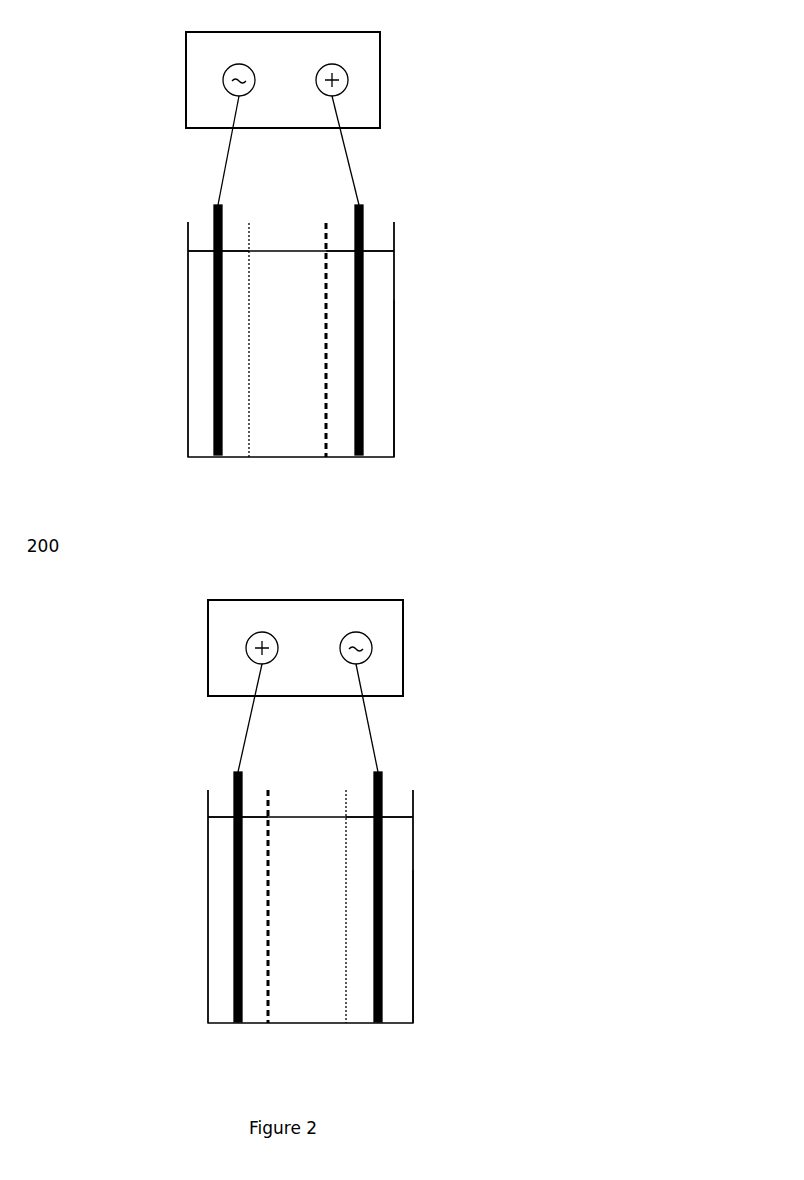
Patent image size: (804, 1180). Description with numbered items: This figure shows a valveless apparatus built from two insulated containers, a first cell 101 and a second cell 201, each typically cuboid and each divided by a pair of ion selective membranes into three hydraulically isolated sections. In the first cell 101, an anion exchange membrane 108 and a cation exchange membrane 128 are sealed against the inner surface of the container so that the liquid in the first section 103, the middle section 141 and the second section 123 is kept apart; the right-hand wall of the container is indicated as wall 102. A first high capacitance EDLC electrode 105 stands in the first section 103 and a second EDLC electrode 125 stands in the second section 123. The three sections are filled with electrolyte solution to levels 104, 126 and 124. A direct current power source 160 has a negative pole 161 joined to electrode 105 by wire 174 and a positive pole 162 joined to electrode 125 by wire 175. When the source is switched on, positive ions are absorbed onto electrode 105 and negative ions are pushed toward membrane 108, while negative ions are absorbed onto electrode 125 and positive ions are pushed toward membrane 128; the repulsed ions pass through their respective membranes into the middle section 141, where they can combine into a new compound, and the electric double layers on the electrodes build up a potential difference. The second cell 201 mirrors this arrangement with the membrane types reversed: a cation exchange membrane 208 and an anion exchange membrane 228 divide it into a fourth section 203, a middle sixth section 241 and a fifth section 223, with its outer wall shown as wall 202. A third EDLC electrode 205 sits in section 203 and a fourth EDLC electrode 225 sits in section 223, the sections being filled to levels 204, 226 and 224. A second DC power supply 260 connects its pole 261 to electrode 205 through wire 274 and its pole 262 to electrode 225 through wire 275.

The direct current electric power source 160 is at (185, 43).
The pole 161 is at (224, 87).
The pole 162 is at (348, 84).
The wire 174 is at (227, 143).
The wire 175 is at (348, 142).
The first insulated container 101 is at (275, 462).
The container wall 102 is at (398, 452).
The first hydraulically isolated volume 103 is at (198, 390).
The electrolyte level 104 is at (202, 252).
The first high capacitance EDLC electrode 105 is at (215, 337).
The first ion selective membrane 108 is at (249, 268).
The electrolyte level 126 is at (292, 250).
The electrolyte level 124 is at (380, 252).
The second ion selective membrane 128 is at (323, 275).
The second EDLC electrode 125 is at (365, 328).
The second hydraulically isolated volume 123 is at (378, 407).
The third hydraulically isolated section 141 is at (292, 440).
The DC electric power supply 260 is at (336, 599).
The pole 261 is at (238, 641).
The pole 262 is at (375, 643).
The wire 274 is at (245, 708).
The wire 275 is at (373, 712).
The second insulated container 201 is at (290, 1032).
The container wall 202 is at (420, 997).
The fourth hydraulically isolated section 203 is at (217, 950).
The electrolyte level 204 is at (218, 812).
The third EDLC electrode 205 is at (235, 897).
The third ion selective membrane 208 is at (269, 837).
The electrolyte level 226 is at (300, 815).
The electrolyte level 224 is at (387, 816).
The fourth ion selective membrane 228 is at (347, 845).
The fourth EDLC electrode 225 is at (385, 877).
The fifth hydraulically isolated section 223 is at (398, 952).
The sixth hydraulically isolated section 241 is at (310, 993).